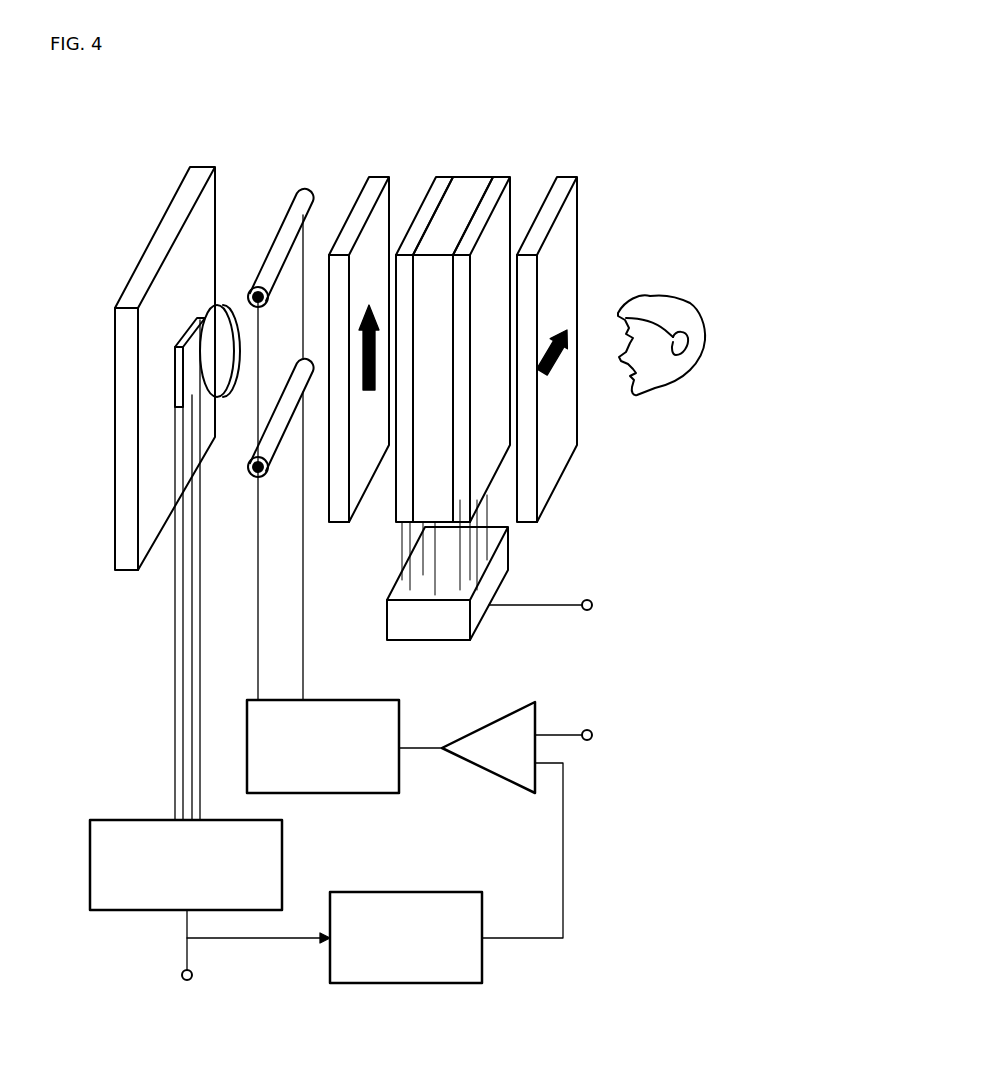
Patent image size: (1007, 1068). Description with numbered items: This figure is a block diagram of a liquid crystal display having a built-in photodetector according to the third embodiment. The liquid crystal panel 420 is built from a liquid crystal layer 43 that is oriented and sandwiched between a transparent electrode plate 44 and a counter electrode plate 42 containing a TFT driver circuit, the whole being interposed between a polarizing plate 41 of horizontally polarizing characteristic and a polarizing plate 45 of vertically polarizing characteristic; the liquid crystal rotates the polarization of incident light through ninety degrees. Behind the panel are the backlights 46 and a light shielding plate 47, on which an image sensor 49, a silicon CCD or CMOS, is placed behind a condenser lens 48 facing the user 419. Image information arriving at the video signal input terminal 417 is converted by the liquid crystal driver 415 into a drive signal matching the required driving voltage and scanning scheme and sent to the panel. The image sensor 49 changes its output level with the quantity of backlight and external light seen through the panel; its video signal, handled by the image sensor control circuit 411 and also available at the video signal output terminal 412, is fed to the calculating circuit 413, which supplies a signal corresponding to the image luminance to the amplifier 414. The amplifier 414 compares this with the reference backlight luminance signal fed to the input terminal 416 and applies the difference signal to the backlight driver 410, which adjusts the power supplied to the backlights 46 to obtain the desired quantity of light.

The polarizing plate 41 is at (573, 176).
The counter electrode plate 42 is at (502, 180).
The liquid crystal layer 43 is at (473, 172).
The transparent electrode plate 44 is at (445, 186).
The polarizing plate 45 is at (368, 187).
The backlights 46 is at (296, 192).
The light shielding plate 47 is at (178, 192).
The condenser lens 48 is at (218, 330).
The image sensor 49 is at (182, 371).
The backlight driver 410 is at (355, 796).
The image sensor control circuit 411 is at (90, 848).
The video signal output terminal 412 is at (193, 975).
The calculating circuit 413 is at (388, 985).
The amplifier 414 is at (492, 777).
The liquid crystal driver 415 is at (482, 620).
The input terminal 416 is at (592, 731).
The video signal input terminal 417 is at (588, 600).
The user 419 is at (660, 392).
The liquid crystal panel 420 is at (690, 88).